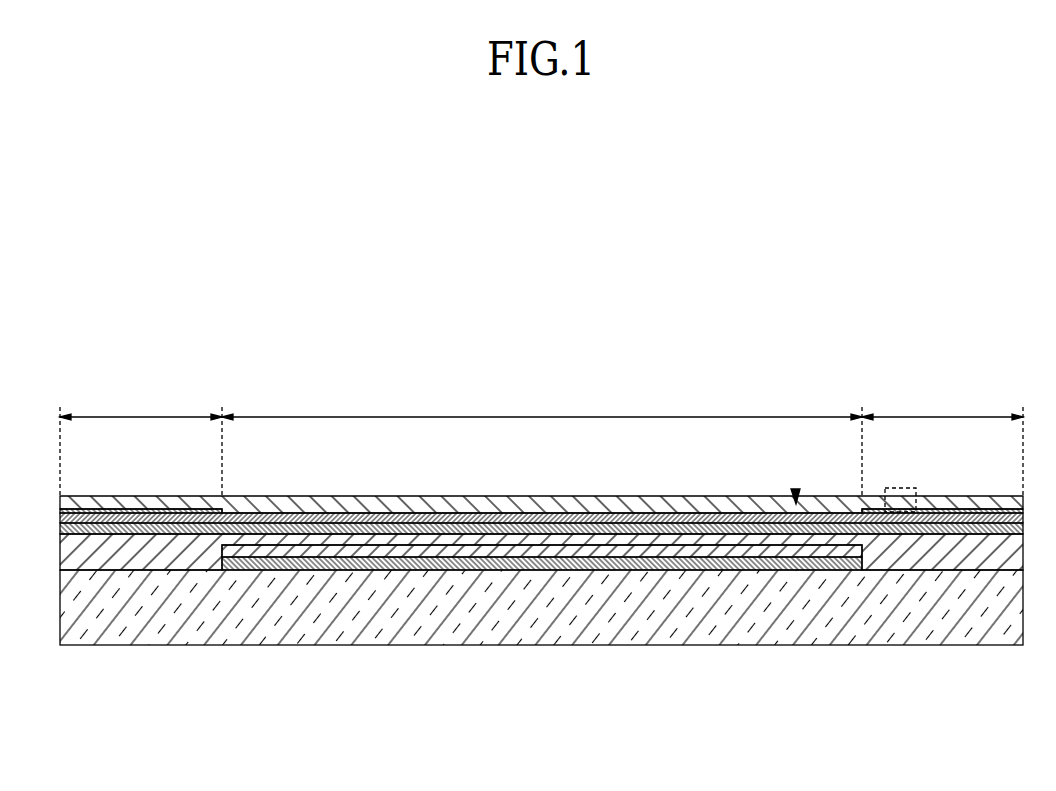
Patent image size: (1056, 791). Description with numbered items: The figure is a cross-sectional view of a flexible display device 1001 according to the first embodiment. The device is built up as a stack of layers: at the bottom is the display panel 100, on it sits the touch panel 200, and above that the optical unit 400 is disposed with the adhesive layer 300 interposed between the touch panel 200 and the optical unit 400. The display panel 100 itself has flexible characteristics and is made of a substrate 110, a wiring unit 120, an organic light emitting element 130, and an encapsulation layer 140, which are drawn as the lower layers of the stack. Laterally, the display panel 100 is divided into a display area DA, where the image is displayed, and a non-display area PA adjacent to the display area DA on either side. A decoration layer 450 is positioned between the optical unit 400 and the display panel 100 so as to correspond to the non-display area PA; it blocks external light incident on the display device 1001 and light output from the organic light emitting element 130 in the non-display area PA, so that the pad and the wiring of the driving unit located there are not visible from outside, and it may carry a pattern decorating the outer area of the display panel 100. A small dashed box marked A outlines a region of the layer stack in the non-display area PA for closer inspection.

The display device 1001 is at (600, 341).
The display panel 100 is at (541, 647).
The substrate 110 is at (152, 713).
The wiring unit 120 is at (465, 563).
The organic light emitting element 130 is at (546, 553).
The encapsulation layer 140 is at (172, 547).
The touch panel 200 is at (665, 527).
The adhesive layer 300 is at (703, 510).
The optical unit 400 is at (797, 489).
The decoration layer 450 is at (975, 512).
The enlarged region A is at (905, 488).
The non-display area PA is at (541, 440).
The display area DA is at (542, 440).